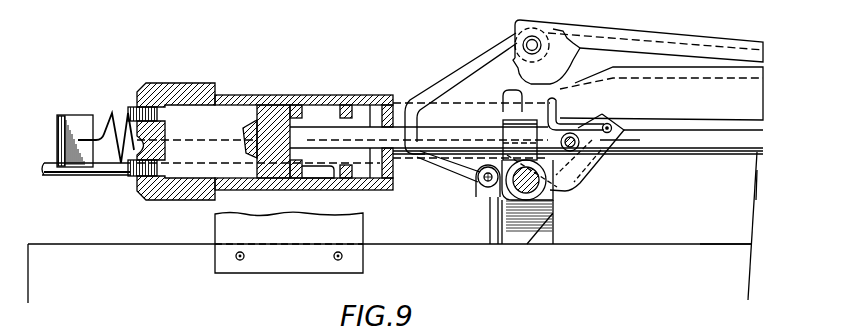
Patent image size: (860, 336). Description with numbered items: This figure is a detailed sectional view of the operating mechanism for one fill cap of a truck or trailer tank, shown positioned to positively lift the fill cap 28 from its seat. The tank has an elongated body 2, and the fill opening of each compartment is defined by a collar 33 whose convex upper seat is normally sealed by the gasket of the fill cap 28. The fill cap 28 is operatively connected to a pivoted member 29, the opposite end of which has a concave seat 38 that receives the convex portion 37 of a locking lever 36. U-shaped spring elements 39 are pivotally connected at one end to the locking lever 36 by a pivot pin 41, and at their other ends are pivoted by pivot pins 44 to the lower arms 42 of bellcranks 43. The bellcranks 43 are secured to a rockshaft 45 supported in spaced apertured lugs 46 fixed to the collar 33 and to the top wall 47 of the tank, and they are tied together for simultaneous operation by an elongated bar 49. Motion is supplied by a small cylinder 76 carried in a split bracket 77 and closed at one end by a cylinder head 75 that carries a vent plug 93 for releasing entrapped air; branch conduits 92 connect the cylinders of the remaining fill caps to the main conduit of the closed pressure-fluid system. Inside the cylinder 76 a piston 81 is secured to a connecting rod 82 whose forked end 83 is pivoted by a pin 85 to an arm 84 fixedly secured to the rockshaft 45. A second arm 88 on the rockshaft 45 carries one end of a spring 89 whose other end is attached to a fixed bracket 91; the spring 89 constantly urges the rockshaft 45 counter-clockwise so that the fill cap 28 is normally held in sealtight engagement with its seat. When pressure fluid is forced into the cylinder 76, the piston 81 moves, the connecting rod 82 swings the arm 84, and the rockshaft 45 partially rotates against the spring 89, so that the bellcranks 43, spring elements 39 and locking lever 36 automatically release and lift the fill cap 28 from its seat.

The elongated body 2 is at (753, 246).
The fill cap 28 is at (757, 198).
The pivoted member 29 is at (757, 103).
The collar 33 is at (740, 225).
The locking lever 36 is at (743, 40).
The convex portion 37 is at (574, 58).
The concave seat 38 is at (516, 88).
The U-shaped spring element 39 is at (500, 46).
The pivot pin 41 is at (533, 39).
The lower arm 42 is at (488, 198).
The bellcrank 43 is at (488, 216).
The pivot pin 44 is at (478, 182).
The rockshaft 45 is at (562, 200).
The apertured lug 46 is at (553, 219).
The top wall 47 is at (628, 243).
The elongated bar 49 is at (504, 99).
The cylinder head 75 is at (165, 82).
The cylinder 76 is at (302, 94).
The split bracket 77 is at (363, 234).
The piston 81 is at (283, 107).
The connecting rod 82 is at (453, 134).
The forked end 83 is at (514, 139).
The arm 84 is at (569, 119).
The pin 85 is at (597, 157).
The second arm 88 is at (609, 123).
The spring 89 is at (104, 116).
The fixed bracket 91 is at (68, 122).
The branch conduit 92 is at (50, 176).
The vent plug 93 is at (131, 106).